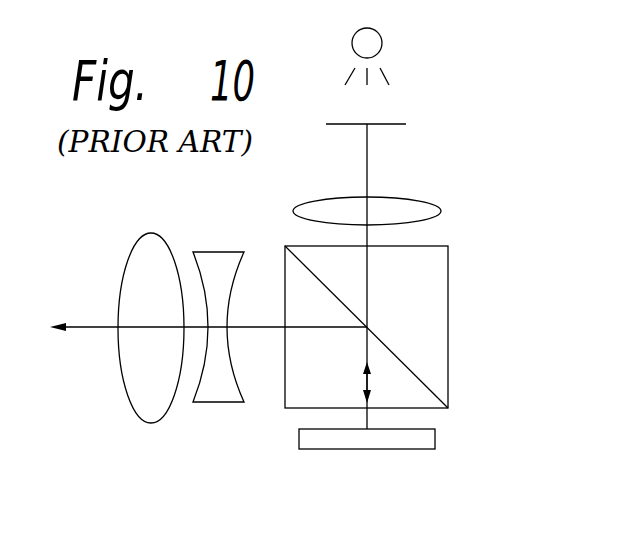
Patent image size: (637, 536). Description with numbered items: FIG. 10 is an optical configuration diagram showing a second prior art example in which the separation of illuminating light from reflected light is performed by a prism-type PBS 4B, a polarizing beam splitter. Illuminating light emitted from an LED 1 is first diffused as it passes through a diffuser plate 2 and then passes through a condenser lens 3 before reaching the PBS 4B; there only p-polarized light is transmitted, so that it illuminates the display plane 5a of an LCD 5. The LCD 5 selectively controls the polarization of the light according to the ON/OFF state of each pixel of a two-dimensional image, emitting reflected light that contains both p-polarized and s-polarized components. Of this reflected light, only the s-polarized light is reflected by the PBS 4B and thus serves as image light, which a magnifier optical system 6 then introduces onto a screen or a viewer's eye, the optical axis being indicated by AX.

The LED 1 is at (382, 43).
The diffuser plate 2 is at (395, 124).
The condenser lens 3 is at (441, 210).
The prism-type PBS 4B is at (448, 336).
The LCD 5 is at (402, 470).
The display plane 5a is at (421, 429).
The magnifier optical system 6 is at (251, 428).
The optical axis AX is at (89, 333).